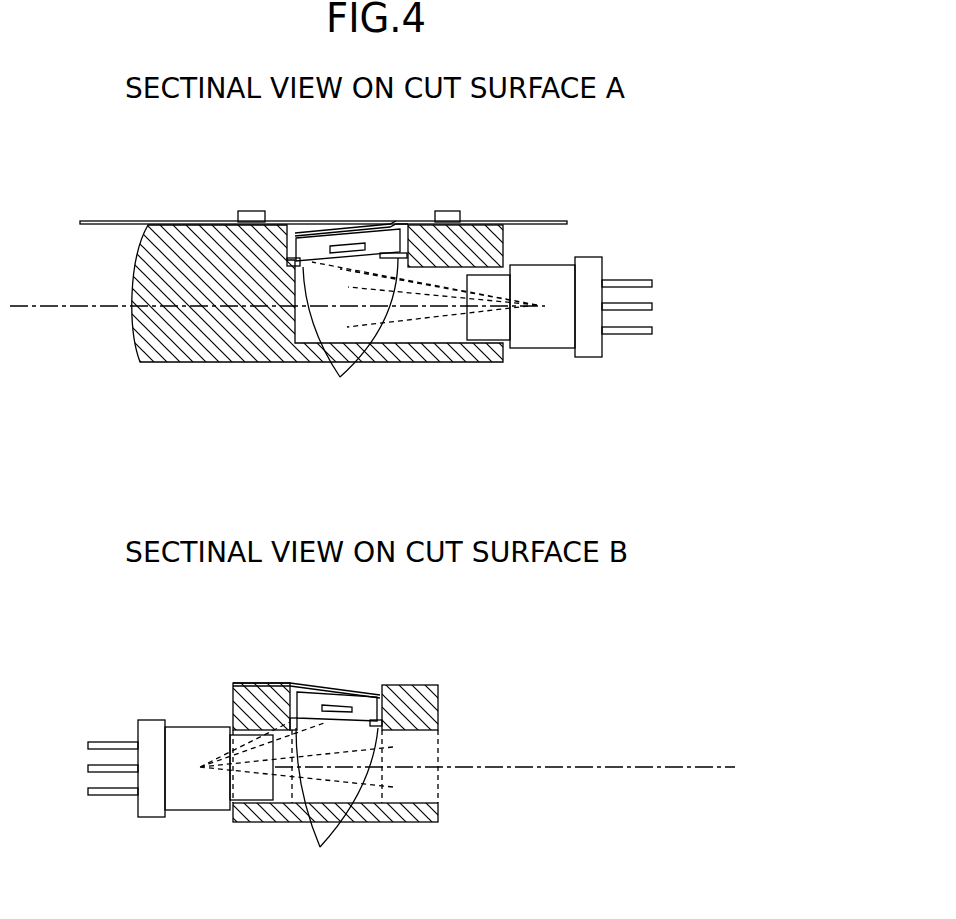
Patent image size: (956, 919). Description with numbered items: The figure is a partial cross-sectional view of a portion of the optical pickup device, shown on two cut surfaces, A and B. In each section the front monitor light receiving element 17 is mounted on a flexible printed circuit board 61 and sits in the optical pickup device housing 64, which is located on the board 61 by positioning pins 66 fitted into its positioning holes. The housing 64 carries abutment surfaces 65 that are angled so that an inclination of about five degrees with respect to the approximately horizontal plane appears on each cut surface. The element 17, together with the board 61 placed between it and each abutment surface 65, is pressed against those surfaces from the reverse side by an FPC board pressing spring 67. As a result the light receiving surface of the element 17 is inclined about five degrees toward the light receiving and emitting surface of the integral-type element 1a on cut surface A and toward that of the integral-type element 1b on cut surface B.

The flexible printed circuit (FPC) board 61 is at (113, 222).
The positioning pin 66 is at (248, 211).
The front monitor light receiving element 17 is at (332, 232).
The FPC board pressing spring 67 is at (360, 230).
The light receiving and emitting integral-type element 1a is at (591, 257).
The light receiving and emitting integral-type element 1b is at (148, 720).
The optical pickup device housing 64 is at (163, 338).
The abutment surface 65 is at (340, 377).